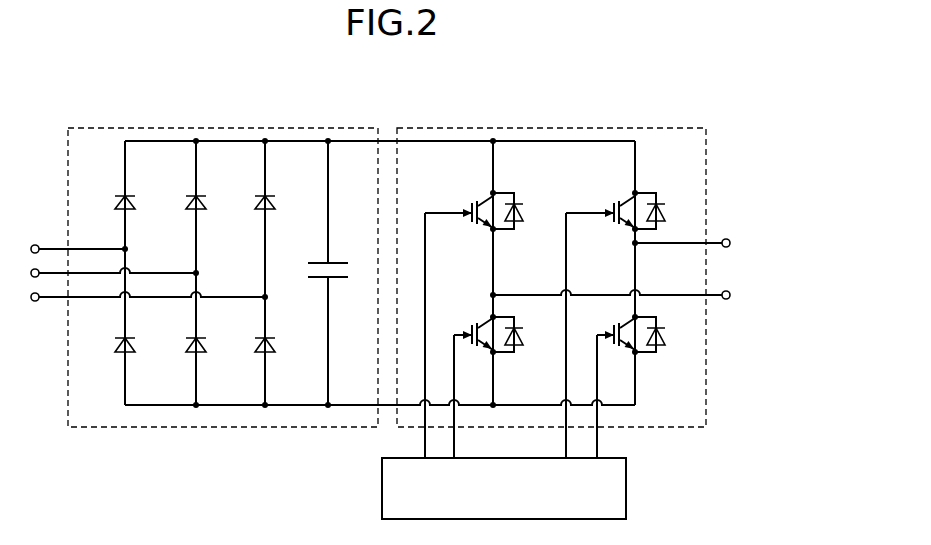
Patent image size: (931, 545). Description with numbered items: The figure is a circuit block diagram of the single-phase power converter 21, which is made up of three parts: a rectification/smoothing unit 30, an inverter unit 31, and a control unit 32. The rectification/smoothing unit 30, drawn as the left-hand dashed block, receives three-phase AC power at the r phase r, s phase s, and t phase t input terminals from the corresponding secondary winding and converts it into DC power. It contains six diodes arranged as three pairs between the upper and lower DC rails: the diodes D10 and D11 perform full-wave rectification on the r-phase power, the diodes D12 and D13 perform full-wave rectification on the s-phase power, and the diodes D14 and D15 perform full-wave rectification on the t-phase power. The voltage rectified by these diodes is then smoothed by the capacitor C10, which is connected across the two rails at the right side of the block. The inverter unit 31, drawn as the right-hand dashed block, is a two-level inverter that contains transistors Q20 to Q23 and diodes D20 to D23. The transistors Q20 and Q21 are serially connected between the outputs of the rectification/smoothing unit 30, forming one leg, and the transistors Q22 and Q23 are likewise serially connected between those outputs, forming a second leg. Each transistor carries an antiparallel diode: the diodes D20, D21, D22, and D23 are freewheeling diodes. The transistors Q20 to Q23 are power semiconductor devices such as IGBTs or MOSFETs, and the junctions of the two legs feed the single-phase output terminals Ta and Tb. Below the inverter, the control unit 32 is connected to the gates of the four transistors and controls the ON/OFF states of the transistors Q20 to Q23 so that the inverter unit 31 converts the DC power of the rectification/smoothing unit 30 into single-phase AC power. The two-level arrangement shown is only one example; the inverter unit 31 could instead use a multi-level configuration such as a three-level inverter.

The single-phase power converter 21 is at (403, 116).
The rectification/smoothing unit 30 is at (214, 128).
The inverter unit 31 is at (540, 128).
The control unit 32 is at (626, 491).
The diode D10 is at (138, 191).
The diode D11 is at (138, 334).
The diode D12 is at (210, 191).
The diode D13 is at (210, 334).
The diode D14 is at (279, 191).
The diode D15 is at (279, 334).
The capacitor C10 is at (336, 273).
The transistor Q20 is at (459, 202).
The transistor Q21 is at (470, 324).
The transistor Q22 is at (600, 204).
The transistor Q23 is at (610, 324).
The freewheeling diode D20 is at (522, 217).
The freewheeling diode D21 is at (522, 340).
The freewheeling diode D22 is at (665, 217).
The freewheeling diode D23 is at (664, 340).
The r phase r is at (25, 249).
The s phase s is at (25, 273).
The t phase t is at (25, 297).
The output terminal Ta is at (736, 244).
The output terminal Tb is at (738, 296).